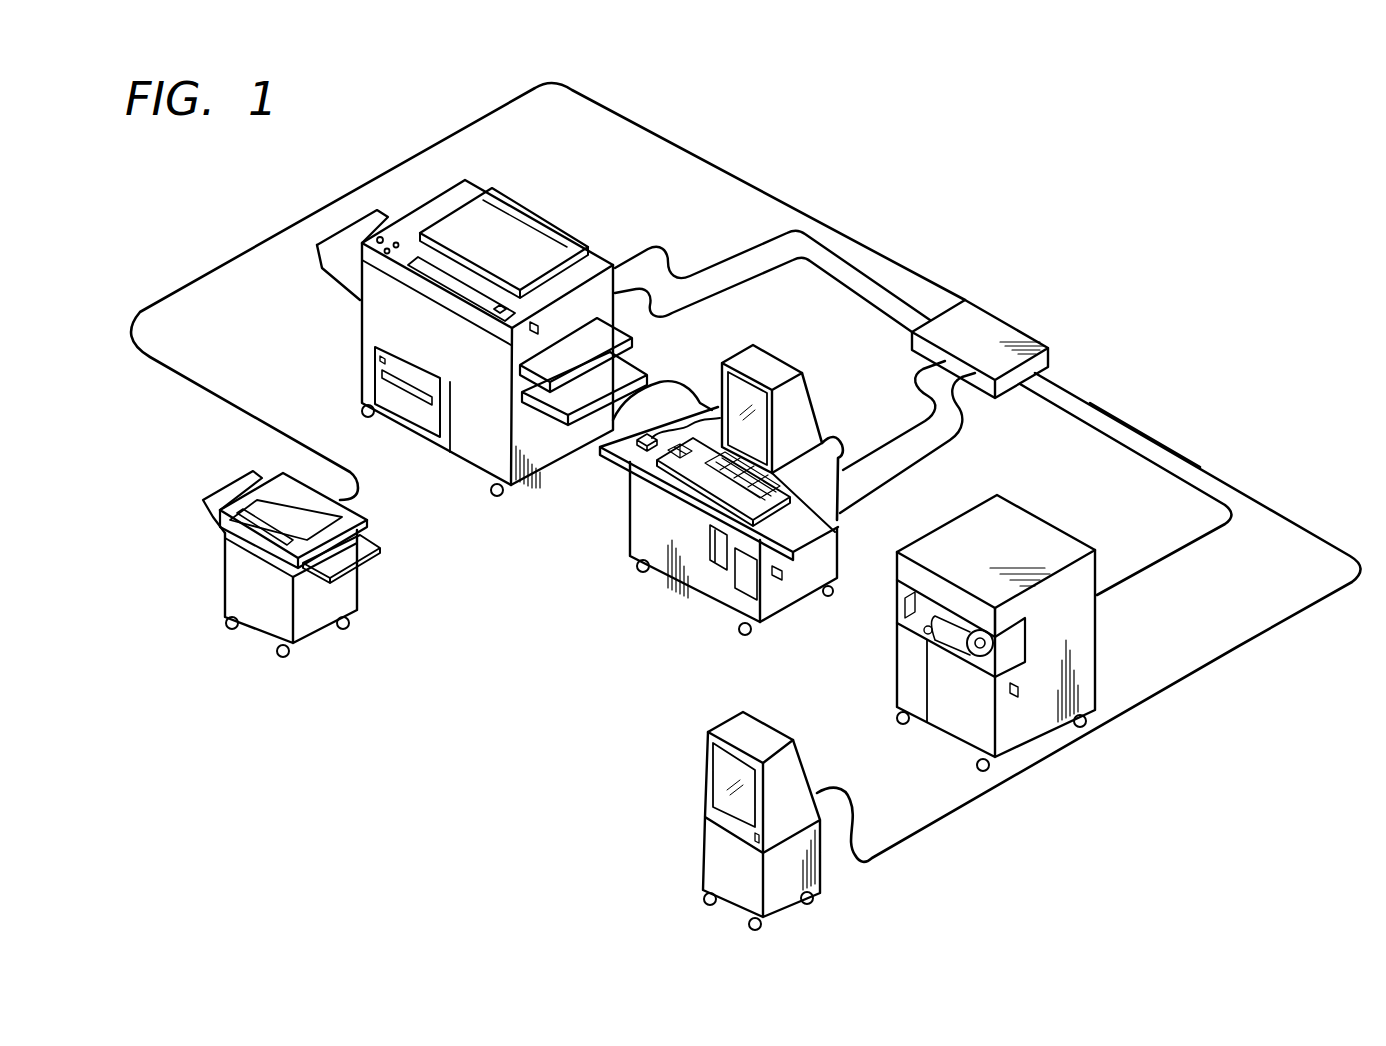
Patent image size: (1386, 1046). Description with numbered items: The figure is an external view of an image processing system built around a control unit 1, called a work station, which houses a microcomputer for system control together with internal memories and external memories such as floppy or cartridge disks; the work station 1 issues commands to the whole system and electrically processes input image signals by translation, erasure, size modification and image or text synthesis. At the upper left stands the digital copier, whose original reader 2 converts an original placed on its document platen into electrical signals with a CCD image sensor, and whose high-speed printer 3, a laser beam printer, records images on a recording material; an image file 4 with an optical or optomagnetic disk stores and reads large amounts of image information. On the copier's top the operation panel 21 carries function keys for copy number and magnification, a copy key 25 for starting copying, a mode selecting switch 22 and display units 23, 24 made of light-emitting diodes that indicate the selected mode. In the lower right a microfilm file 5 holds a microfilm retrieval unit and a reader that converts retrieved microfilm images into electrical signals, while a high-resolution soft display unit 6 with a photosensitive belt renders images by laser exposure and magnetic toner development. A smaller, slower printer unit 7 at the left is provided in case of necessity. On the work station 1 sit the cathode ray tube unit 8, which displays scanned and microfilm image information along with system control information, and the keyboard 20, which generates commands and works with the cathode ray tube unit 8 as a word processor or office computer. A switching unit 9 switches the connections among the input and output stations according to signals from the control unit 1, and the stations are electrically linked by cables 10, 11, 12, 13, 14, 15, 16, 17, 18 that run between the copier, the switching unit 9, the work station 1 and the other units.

The control unit 1 is at (640, 493).
The original reader 2 is at (472, 193).
The high-speed printer 3 is at (370, 318).
The image file 4 is at (430, 422).
The microfilm file 5 is at (1048, 542).
The high-resolution soft display unit 6 is at (758, 732).
The printer unit 7 is at (237, 583).
The cathode ray tube unit 8 is at (747, 397).
The switching unit 9 is at (990, 322).
The cable 10 is at (735, 179).
The cable 11 is at (700, 272).
The cable 12 is at (732, 281).
The cable 13 is at (887, 443).
The cable 14 is at (933, 455).
The cable 15 is at (1077, 418).
The cable 16 is at (1105, 407).
The cable 17 is at (678, 384).
The cable 18 is at (823, 420).
The keyboard 20 is at (833, 532).
The operation panel 21 is at (462, 290).
The mode selecting switch 22 is at (380, 238).
The display unit 23 is at (396, 243).
The display unit 24 is at (324, 268).
The copy key 25 is at (498, 313).